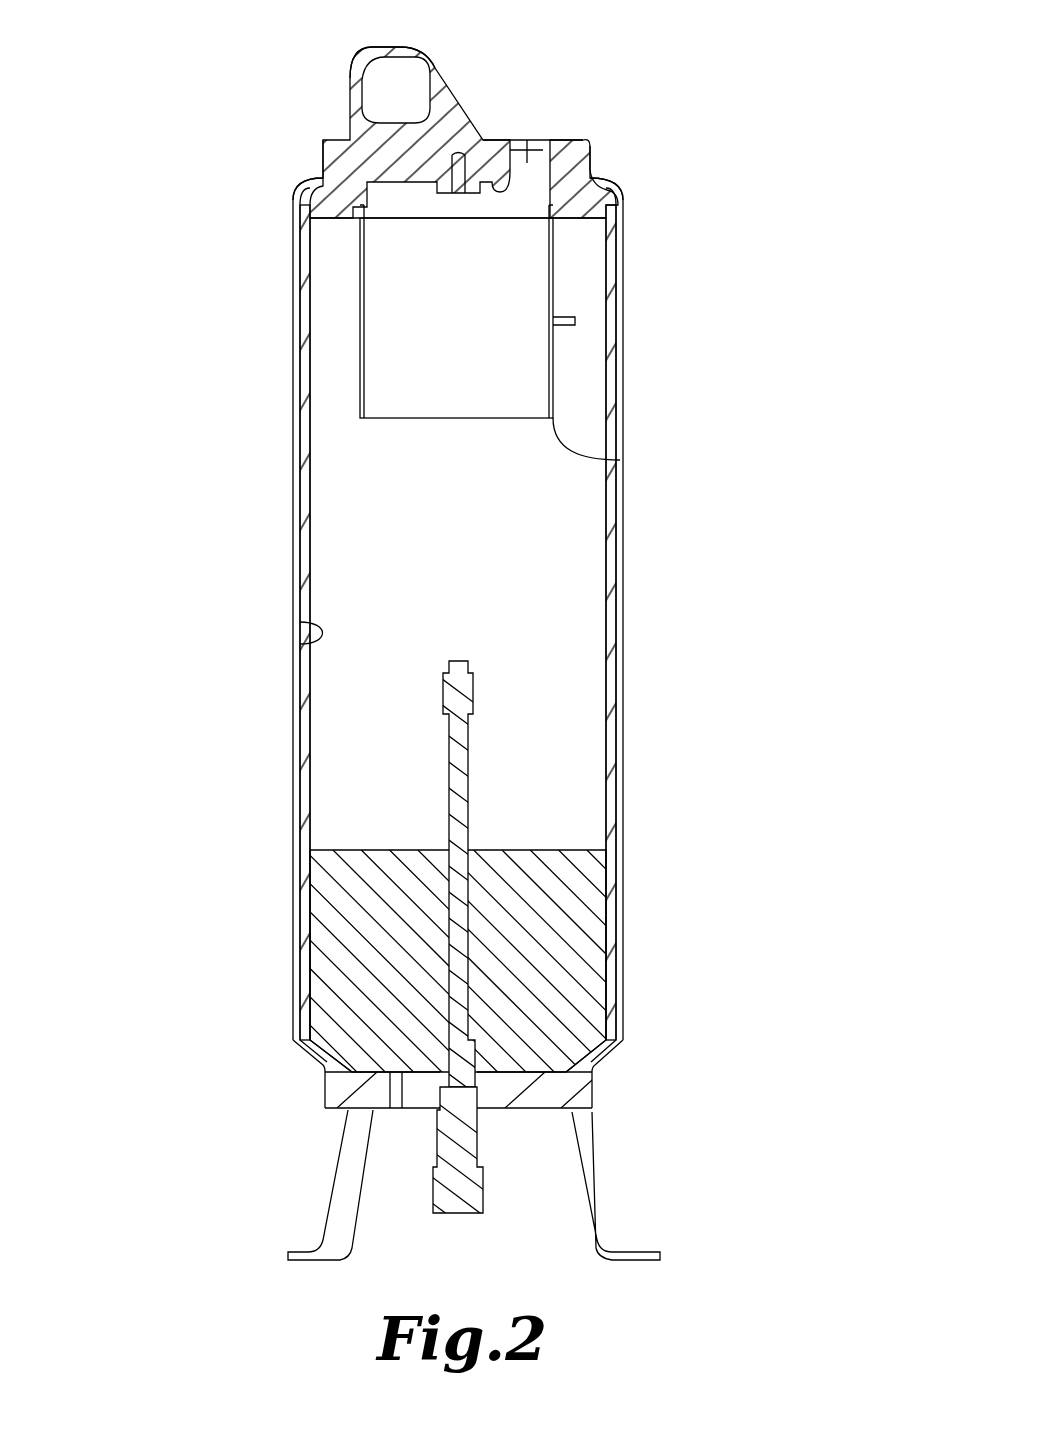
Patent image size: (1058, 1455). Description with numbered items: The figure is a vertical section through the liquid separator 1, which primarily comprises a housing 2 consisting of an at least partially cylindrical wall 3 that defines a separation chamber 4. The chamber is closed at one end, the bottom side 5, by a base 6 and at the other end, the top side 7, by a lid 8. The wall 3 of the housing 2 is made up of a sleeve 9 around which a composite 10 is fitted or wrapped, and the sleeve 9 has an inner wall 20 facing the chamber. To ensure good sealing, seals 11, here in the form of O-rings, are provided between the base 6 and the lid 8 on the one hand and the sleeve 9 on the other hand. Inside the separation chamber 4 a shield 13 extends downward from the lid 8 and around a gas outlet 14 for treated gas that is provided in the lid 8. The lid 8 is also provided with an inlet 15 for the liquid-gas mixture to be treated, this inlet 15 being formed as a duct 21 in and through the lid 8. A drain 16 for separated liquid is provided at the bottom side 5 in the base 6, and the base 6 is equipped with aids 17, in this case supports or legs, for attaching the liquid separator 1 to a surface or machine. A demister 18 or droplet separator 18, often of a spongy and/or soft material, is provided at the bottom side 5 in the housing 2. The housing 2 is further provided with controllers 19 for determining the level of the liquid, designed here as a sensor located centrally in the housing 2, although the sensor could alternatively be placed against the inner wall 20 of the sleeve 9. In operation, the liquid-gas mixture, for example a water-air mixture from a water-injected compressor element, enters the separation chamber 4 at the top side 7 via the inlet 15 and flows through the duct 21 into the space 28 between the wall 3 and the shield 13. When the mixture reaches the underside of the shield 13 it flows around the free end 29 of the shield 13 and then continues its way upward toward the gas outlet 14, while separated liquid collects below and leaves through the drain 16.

The liquid separator 1 is at (675, 53).
The housing 2 is at (297, 203).
The wall 3 is at (298, 434).
The separation chamber 4 is at (443, 549).
The bottom side 5 is at (707, 1090).
The base 6 is at (370, 1087).
The top side 7 is at (707, 162).
The lid 8 is at (570, 137).
The sleeve 9 is at (310, 763).
The composite 10 is at (296, 688).
The seal 11 is at (615, 196).
The shield 13 is at (358, 352).
The gas outlet 14 is at (527, 162).
The inlet 15 is at (393, 90).
The drain 16 is at (396, 1092).
The aids 17 is at (345, 1211).
The demister 18 is at (555, 935).
The controllers 19 is at (467, 685).
The inner wall 20 is at (300, 632).
The duct 21 is at (458, 125).
The space 28 is at (318, 392).
The free end 29 is at (620, 460).